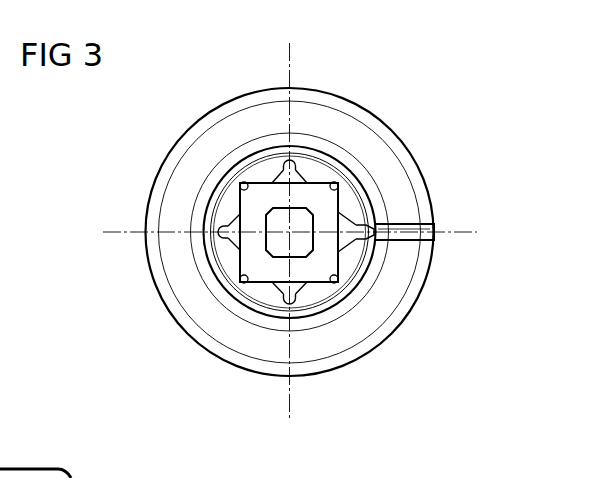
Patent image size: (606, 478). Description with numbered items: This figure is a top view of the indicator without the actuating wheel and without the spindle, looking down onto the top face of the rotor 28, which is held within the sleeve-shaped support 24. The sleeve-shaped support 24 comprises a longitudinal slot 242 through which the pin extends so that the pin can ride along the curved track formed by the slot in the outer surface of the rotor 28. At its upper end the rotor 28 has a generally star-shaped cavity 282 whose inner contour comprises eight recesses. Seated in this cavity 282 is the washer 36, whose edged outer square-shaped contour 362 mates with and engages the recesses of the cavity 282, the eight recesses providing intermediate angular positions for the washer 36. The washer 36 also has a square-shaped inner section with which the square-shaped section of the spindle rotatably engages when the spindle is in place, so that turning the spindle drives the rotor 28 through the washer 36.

The sleeve-shaped support 24 is at (380, 318).
The longitudinal slot 242 is at (427, 238).
The washer 36 is at (245, 207).
The outer square-shaped contour 362 is at (342, 200).
The rotor 28 is at (315, 293).
The cavity 282 is at (283, 165).